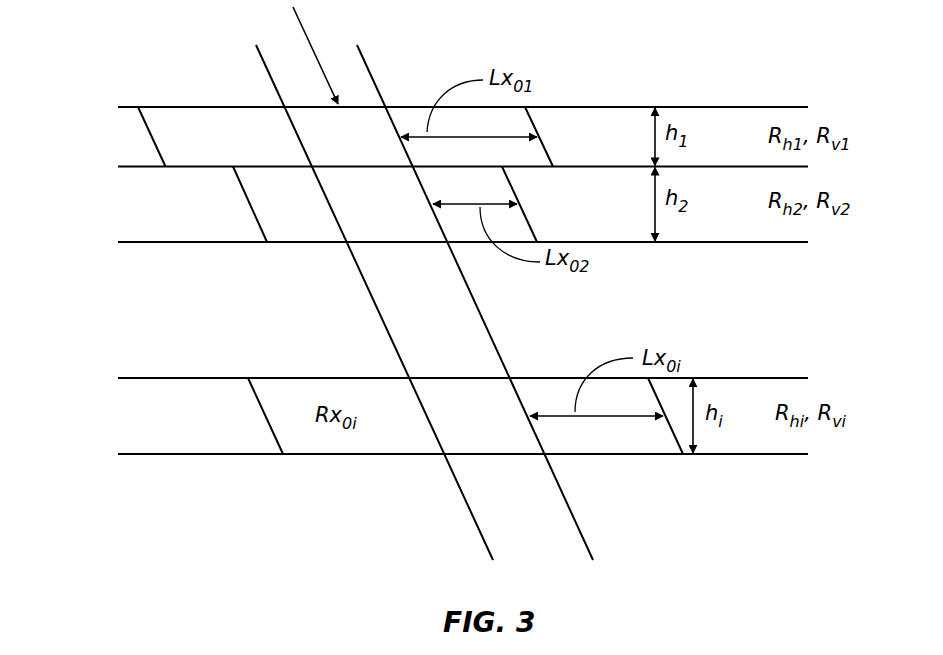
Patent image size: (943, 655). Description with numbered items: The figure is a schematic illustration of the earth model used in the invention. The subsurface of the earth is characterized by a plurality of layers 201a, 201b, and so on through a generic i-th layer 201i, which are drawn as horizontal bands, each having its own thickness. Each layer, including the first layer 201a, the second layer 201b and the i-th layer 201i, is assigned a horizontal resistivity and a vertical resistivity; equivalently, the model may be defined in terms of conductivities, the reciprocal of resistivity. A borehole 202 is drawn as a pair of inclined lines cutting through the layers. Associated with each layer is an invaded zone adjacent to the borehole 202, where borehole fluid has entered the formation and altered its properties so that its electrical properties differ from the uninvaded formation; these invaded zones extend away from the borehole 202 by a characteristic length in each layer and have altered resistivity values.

The layer 201a is at (122, 140).
The layer 201b is at (122, 213).
The layer 201i is at (122, 415).
The borehole 202 is at (306, 30).